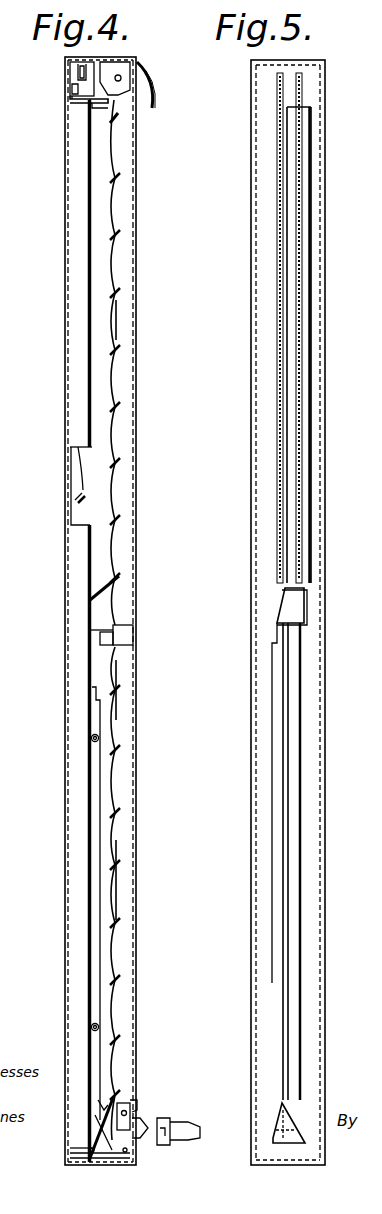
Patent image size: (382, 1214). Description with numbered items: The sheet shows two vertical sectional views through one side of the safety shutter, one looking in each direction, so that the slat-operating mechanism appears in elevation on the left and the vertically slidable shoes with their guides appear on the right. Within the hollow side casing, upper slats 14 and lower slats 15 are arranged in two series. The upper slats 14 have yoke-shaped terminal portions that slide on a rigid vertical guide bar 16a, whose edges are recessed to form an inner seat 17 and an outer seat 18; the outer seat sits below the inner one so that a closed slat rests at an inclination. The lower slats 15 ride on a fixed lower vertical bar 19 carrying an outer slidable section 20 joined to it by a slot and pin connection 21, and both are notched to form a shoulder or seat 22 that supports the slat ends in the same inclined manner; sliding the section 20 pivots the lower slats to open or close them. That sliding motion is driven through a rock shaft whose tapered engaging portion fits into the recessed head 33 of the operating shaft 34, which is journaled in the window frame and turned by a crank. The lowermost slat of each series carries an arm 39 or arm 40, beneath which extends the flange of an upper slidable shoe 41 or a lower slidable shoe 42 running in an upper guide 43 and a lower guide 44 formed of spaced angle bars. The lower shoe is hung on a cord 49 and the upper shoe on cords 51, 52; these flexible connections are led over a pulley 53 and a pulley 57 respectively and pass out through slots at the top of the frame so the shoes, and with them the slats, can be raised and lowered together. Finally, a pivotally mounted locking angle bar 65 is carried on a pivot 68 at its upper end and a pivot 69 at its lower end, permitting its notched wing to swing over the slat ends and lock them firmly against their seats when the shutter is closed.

In FIG. 4, the upper slat 14 is at (121, 234).
In FIG. 4, the lower slat 15 is at (122, 692).
In FIG. 4, the vertical guide bar 16a is at (100, 333).
In FIG. 4, the inner seat 17 is at (82, 527).
In FIG. 4, the outer seat 18 is at (117, 358).
In FIG. 4, the lower vertical bar 19 is at (113, 893).
In FIG. 4, the slidable section 20 is at (96, 832).
In FIG. 4, the slot and pin connection 21 is at (92, 739).
In FIG. 4, the shoulder or seat 22 is at (118, 862).
In FIG. 4, the recessed head 33 is at (163, 1118).
In FIG. 4, the operating shaft 34 is at (190, 1122).
In FIG. 4, the arm of lowermost upper slat 39 is at (100, 600).
In FIG. 4, the arm of lowermost lower slat 40 is at (103, 1095).
In FIG. 5, the upper slidable shoe 41 is at (302, 608).
In FIG. 5, the lower slidable shoe 42 is at (275, 1130).
In FIG. 5, the upper guide 43 is at (310, 295).
In FIG. 5, the lower guide 44 is at (293, 810).
In FIG. 5, the cord 49 is at (290, 395).
In FIG. 5, the cord 51 is at (298, 394).
In FIG. 4, the cord 52 is at (150, 108).
In FIG. 4, the pulley 53 is at (122, 70).
In FIG. 4, the pulley 57 is at (85, 77).
In FIG. 4, the locking angle bar 65 is at (72, 258).
In FIG. 4, the pivot 68 is at (70, 100).
In FIG. 4, the pivot 69 is at (88, 1148).